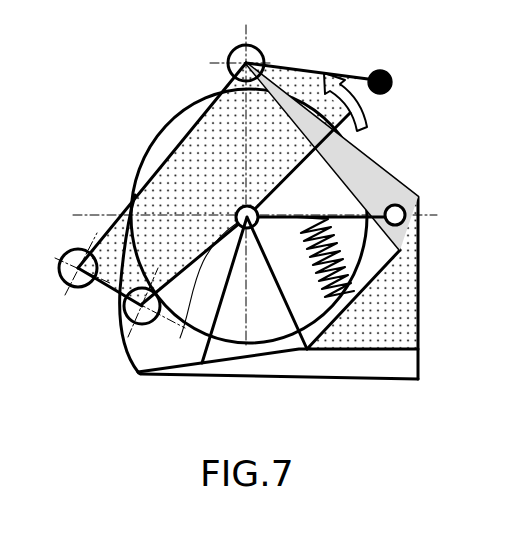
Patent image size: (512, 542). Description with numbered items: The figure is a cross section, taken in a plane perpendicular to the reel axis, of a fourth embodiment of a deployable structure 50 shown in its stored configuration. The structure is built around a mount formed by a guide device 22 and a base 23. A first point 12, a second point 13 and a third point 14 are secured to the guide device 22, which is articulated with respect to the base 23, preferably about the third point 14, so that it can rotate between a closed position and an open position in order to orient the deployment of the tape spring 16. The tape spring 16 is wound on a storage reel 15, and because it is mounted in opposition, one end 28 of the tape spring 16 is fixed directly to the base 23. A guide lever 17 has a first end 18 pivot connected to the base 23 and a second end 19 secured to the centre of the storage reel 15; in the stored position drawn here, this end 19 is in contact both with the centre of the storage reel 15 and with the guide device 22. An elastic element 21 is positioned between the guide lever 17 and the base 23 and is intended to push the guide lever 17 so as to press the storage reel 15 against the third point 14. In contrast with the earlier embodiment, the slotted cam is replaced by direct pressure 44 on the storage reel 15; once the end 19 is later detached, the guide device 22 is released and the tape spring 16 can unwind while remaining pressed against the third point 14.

The deployable structure 50 is at (97, 53).
The first point 12 is at (73, 250).
The second point 13 is at (124, 312).
The third point 14 is at (263, 50).
The storage reel 15 is at (163, 118).
The tape spring 16 is at (208, 372).
The guide lever 17 is at (290, 212).
The first end 18 is at (407, 213).
The second end 19 is at (246, 230).
The elastic element 21 is at (300, 261).
The guide device 22 is at (103, 243).
The base 23 is at (418, 317).
The second end of the tape spring 28 is at (372, 365).
The direct pressure 44 is at (392, 80).